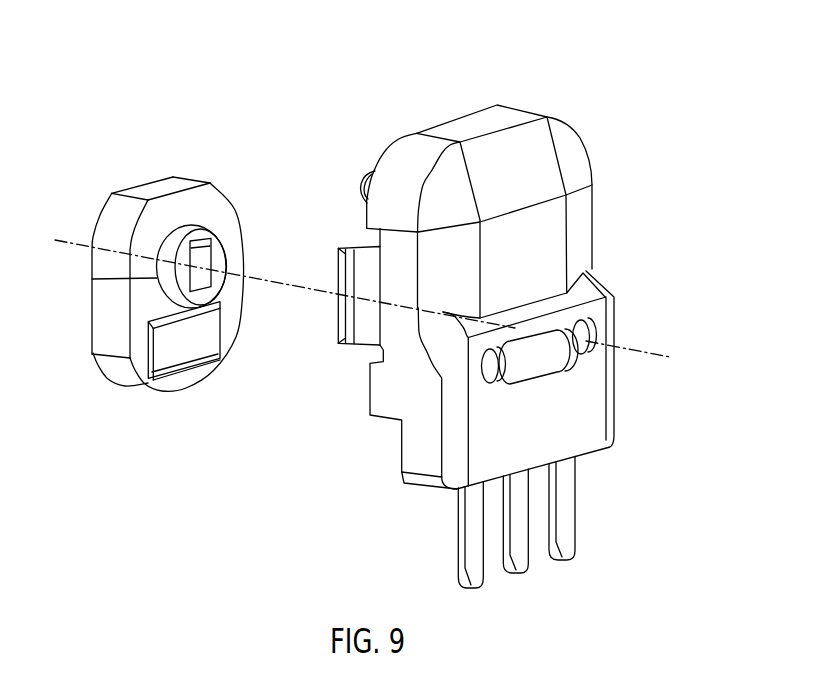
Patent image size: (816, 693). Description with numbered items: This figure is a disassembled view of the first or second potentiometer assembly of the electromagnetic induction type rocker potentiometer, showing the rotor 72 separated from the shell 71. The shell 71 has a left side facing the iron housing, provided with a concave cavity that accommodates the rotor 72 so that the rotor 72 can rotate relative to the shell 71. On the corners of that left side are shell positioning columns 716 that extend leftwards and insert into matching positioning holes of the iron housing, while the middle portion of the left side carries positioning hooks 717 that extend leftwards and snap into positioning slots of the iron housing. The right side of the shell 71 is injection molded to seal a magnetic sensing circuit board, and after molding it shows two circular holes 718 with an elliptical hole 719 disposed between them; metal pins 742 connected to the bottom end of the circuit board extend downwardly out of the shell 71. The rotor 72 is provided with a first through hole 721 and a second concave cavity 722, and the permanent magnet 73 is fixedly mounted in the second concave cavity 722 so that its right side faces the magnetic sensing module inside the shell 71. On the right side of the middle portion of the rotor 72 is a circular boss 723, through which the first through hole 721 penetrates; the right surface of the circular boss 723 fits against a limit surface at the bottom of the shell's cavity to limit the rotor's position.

The shell 71 is at (513, 158).
The shell positioning column 716 is at (361, 177).
The positioning hook 717 is at (368, 278).
The circular hole 718 is at (603, 313).
The elliptical hole 719 is at (548, 363).
The rotor 72 is at (160, 176).
The first through hole 721 is at (157, 278).
The second concave cavity 722 is at (143, 380).
The circular boss 723 is at (192, 228).
The permanent magnet 73 is at (182, 343).
The metal pins 742 is at (567, 535).